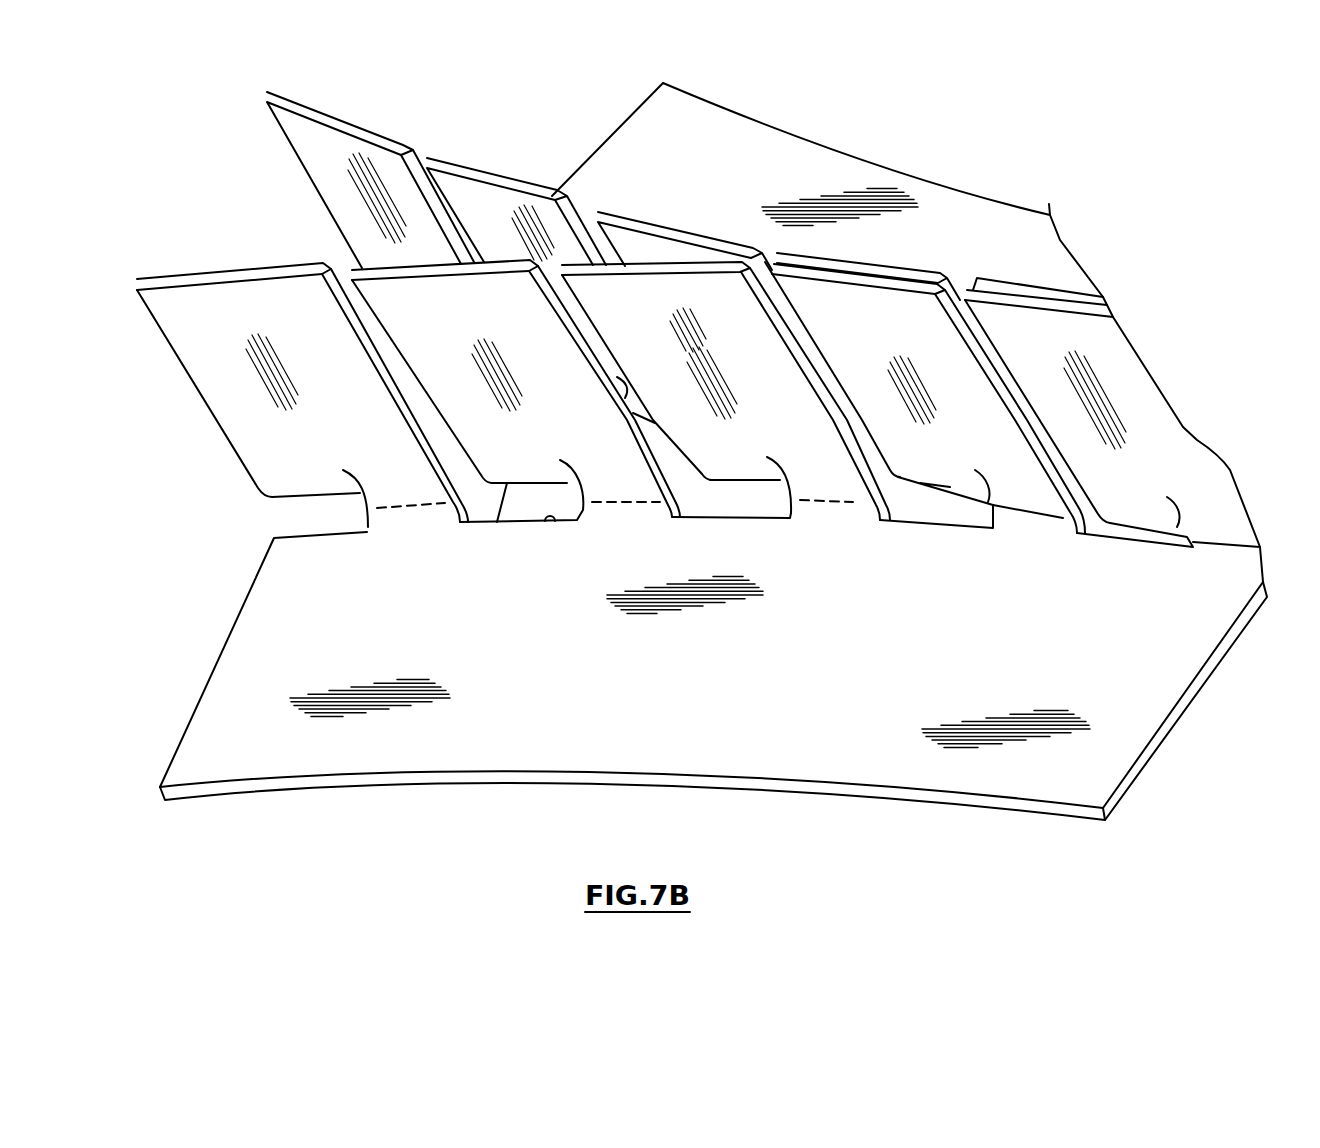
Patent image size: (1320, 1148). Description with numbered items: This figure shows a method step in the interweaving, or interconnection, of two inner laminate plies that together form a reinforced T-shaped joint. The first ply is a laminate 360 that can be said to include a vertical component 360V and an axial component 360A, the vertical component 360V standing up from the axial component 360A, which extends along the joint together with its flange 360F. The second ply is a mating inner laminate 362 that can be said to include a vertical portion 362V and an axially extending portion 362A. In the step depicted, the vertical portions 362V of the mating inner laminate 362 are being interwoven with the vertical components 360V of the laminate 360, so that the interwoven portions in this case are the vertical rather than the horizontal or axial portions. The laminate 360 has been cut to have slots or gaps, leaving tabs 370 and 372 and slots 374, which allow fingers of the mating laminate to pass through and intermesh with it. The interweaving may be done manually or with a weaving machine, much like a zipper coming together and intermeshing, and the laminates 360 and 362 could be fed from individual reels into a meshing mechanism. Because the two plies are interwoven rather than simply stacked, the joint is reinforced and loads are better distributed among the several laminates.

The laminate 360 is at (702, 547).
The axial component 360A is at (490, 743).
The vertical component 360V is at (452, 373).
The flange of base plate 360F is at (820, 512).
The mating inner laminate 362 is at (758, 332).
The axial extending portion 362A is at (862, 186).
The vertical portion 362V is at (488, 203).
The tab 370 is at (547, 515).
The tab 372 is at (497, 524).
The slot 374 is at (595, 350).